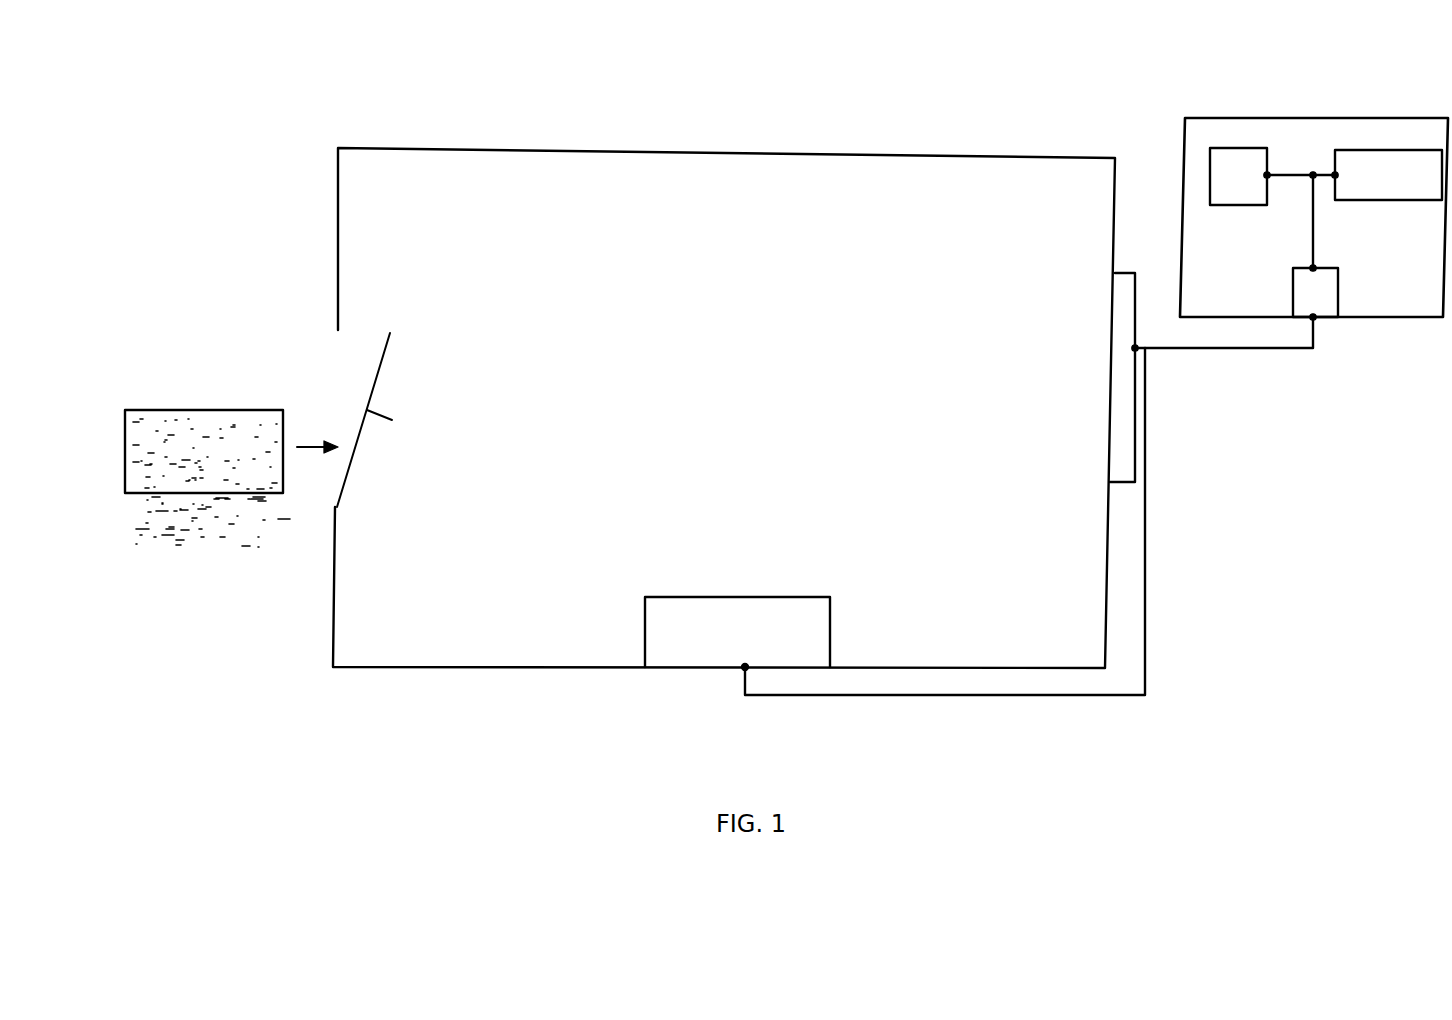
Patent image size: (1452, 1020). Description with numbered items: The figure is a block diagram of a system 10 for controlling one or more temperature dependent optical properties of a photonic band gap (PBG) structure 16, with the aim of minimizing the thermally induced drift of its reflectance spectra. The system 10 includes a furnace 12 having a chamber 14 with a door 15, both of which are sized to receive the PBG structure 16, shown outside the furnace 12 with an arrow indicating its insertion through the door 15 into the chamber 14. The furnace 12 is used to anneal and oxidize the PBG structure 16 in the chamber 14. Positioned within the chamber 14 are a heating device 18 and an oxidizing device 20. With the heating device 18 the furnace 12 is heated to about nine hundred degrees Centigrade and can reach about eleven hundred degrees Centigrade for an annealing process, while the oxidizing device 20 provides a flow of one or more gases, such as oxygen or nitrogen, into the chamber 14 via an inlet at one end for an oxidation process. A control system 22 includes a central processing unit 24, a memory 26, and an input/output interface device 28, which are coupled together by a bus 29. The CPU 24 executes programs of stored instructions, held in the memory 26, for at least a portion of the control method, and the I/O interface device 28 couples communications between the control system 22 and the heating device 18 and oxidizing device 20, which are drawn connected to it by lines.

The system 10 is at (1213, 468).
The furnace 12 is at (443, 155).
The chamber 14 is at (725, 407).
The door 15 is at (397, 420).
The PBG structure 16 is at (178, 410).
The heating device 18 is at (808, 630).
The oxidizing device 20 is at (1127, 320).
The control system 22 is at (1296, 200).
The central processing unit 24 is at (1230, 207).
The memory 26 is at (1382, 202).
The input/output interface device 28 is at (1338, 298).
The bus 29 is at (1313, 220).